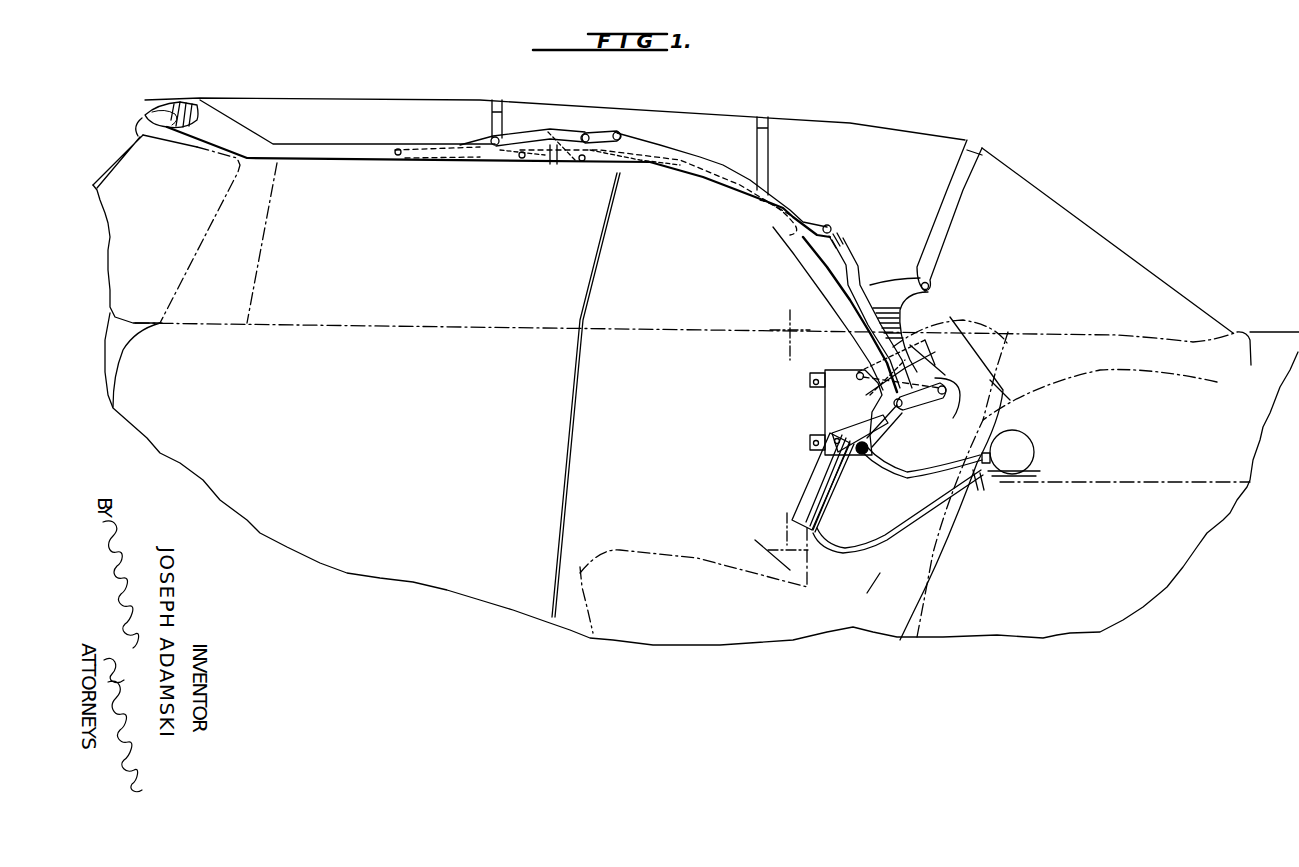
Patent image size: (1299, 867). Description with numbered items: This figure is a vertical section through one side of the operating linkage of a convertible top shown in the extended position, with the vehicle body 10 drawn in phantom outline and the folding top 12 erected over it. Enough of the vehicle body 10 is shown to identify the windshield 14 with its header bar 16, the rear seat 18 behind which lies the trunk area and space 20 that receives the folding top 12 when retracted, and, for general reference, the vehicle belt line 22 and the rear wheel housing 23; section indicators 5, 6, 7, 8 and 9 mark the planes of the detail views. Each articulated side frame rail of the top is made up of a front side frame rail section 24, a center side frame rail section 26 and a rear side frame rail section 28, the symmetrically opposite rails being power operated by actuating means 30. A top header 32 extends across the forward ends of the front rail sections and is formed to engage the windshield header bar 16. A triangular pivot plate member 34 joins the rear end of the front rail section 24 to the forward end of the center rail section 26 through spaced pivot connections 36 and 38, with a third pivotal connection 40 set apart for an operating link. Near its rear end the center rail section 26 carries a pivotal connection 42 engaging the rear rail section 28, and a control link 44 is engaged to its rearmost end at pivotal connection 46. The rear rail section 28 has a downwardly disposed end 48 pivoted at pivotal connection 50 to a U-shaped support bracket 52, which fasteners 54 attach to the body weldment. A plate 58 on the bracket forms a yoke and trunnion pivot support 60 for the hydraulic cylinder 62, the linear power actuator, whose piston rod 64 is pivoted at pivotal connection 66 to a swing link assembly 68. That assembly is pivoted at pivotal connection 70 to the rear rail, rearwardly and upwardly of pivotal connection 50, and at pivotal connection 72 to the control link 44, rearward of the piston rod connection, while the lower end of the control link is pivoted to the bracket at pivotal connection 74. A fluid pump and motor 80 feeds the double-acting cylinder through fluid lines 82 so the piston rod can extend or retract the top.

The section line 5 is at (765, 175).
The section line 6 is at (980, 370).
The section line 7 is at (806, 322).
The section line 8 is at (920, 347).
The section line 9 is at (775, 340).
The vehicle body 10 is at (390, 596).
The folding top 12 is at (847, 108).
The windshield 14 is at (192, 232).
The header bar 16 is at (140, 120).
The rear seat 18 is at (700, 640).
The trunk area and space 20 is at (1278, 358).
The vehicle belt line 22 is at (493, 332).
The rear wheel housing 23 is at (1193, 380).
The front side frame rail section 24 is at (333, 161).
The center side frame rail section 26 is at (661, 175).
The rear side frame rail section 28 is at (797, 268).
The actuating means 30 is at (1035, 435).
The top header 32 is at (178, 106).
The pivot plate member 34 is at (537, 166).
The pivot connection 36 is at (520, 160).
The pivot connection 38 is at (580, 163).
The third pivotal connection 40 is at (548, 132).
The pivotal connection 42 is at (775, 225).
The control link 44 is at (851, 267).
The pivotal connection 46 is at (835, 226).
The downwardly disposed end 48 is at (830, 300).
The pivotal connection 50 is at (833, 373).
The support bracket 52 is at (822, 412).
The fasteners 54 is at (815, 385).
The plate 58 is at (848, 478).
The yoke and trunnion pivot support 60 is at (870, 470).
The hydraulic cylinder 62 is at (800, 500).
The piston rod 64 is at (885, 440).
The pivotal connection 66 is at (890, 376).
The swing link assembly 68 is at (947, 395).
The pivotal connection 70 is at (900, 334).
The pivotal connection 72 is at (935, 405).
The pivotal connection 74 is at (900, 410).
The fluid pump and motor 80 is at (1020, 456).
The fluid lines 82 is at (977, 483).